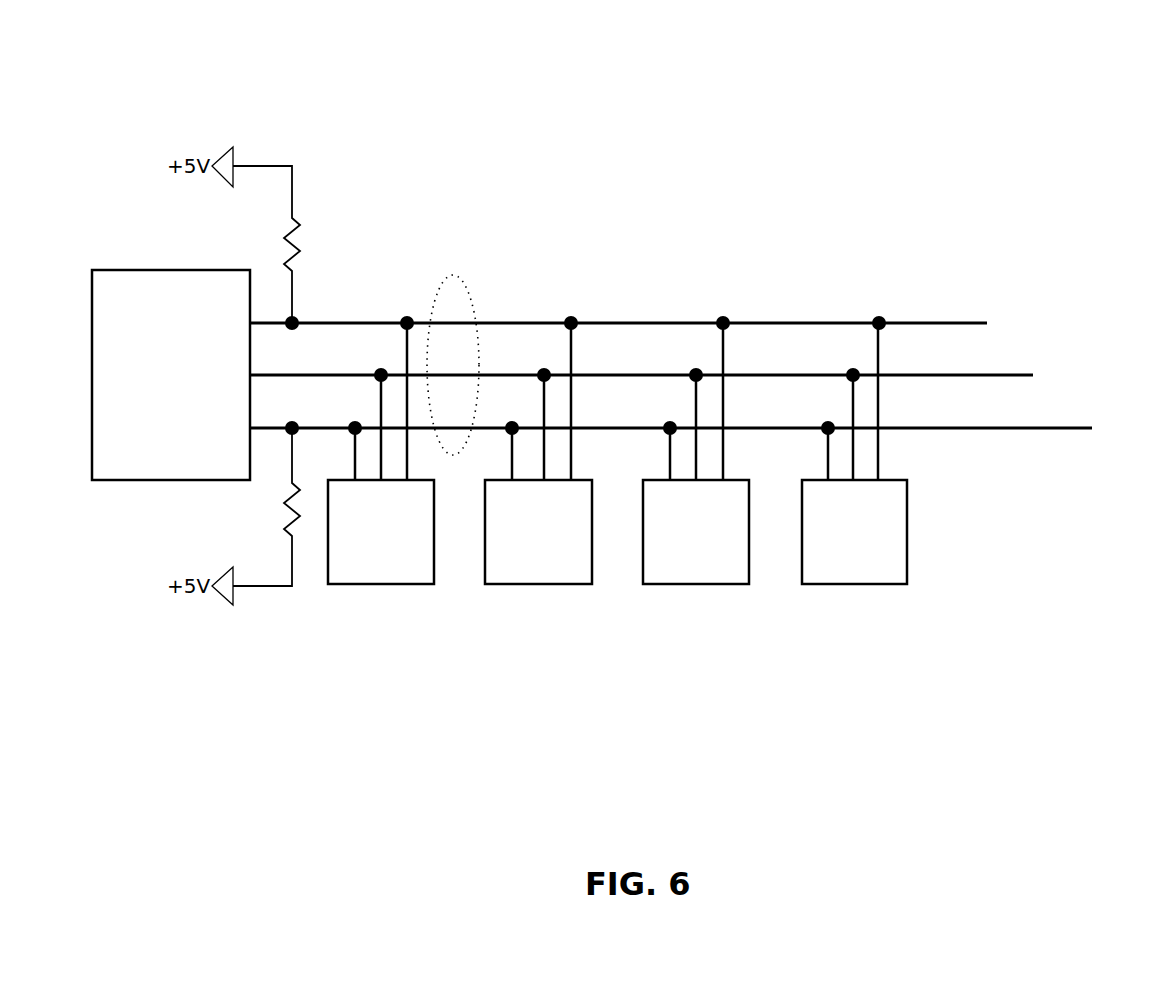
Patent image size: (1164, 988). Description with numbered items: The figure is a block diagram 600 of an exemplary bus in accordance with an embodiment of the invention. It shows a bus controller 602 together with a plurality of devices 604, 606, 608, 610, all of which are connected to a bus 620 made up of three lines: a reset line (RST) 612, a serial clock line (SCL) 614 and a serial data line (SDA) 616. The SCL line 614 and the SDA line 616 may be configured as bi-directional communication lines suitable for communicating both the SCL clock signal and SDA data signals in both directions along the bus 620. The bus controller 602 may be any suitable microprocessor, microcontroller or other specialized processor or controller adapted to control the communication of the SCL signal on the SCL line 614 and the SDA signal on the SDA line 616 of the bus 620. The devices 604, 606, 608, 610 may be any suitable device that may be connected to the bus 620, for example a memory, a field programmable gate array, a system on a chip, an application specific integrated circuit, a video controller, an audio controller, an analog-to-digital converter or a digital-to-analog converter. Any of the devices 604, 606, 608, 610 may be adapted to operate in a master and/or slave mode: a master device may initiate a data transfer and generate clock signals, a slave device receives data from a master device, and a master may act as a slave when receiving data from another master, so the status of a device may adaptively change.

The block diagram 600 is at (437, 145).
The bus controller 602 is at (152, 480).
The device 604 is at (363, 584).
The device 606 is at (520, 584).
The device 608 is at (680, 584).
The device 610 is at (837, 584).
The reset line (RST) 612 is at (665, 375).
The serial clock line (SCL) 614 is at (793, 323).
The serial data line (SDA) 616 is at (603, 428).
The bus 620 is at (455, 275).